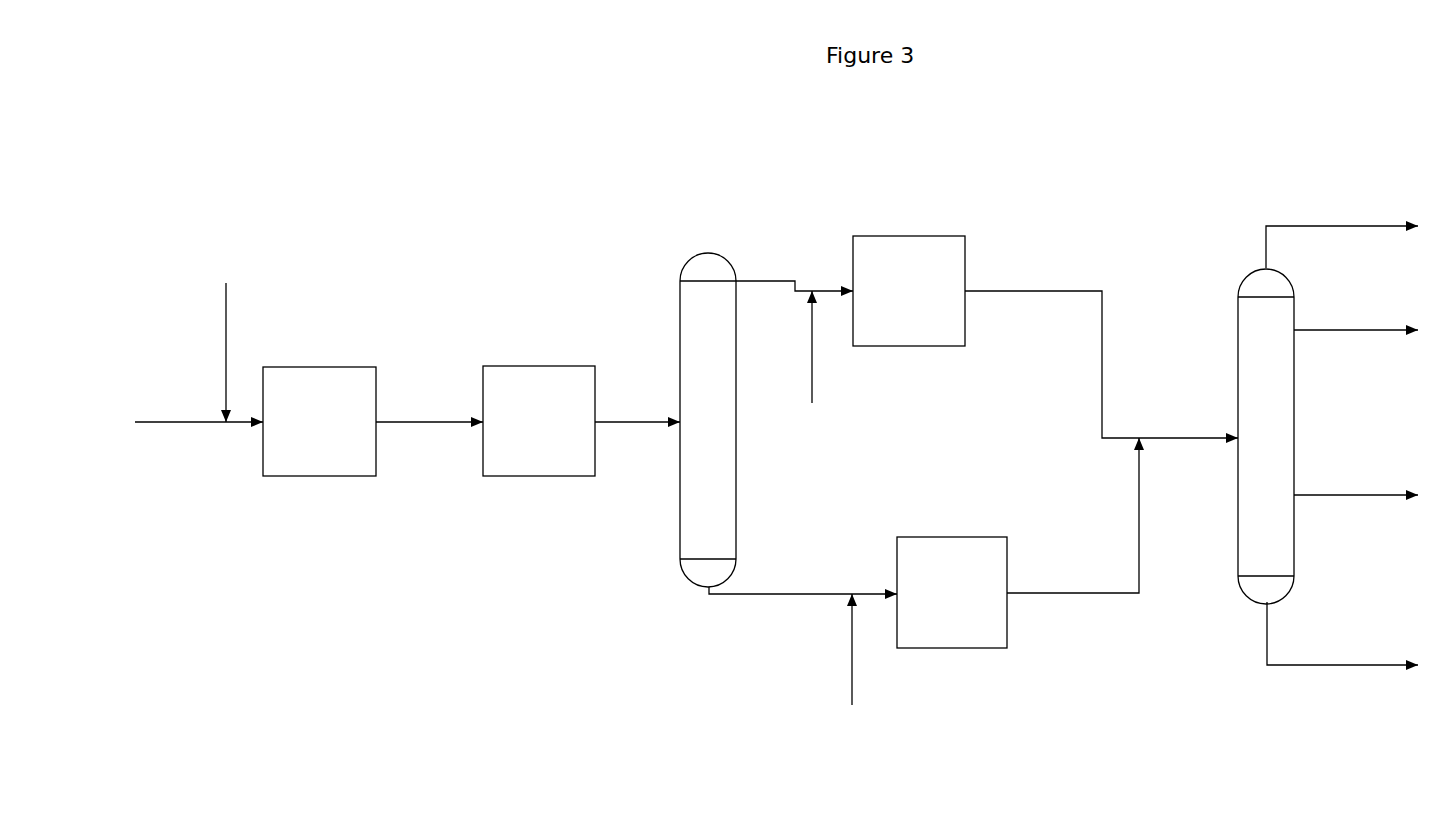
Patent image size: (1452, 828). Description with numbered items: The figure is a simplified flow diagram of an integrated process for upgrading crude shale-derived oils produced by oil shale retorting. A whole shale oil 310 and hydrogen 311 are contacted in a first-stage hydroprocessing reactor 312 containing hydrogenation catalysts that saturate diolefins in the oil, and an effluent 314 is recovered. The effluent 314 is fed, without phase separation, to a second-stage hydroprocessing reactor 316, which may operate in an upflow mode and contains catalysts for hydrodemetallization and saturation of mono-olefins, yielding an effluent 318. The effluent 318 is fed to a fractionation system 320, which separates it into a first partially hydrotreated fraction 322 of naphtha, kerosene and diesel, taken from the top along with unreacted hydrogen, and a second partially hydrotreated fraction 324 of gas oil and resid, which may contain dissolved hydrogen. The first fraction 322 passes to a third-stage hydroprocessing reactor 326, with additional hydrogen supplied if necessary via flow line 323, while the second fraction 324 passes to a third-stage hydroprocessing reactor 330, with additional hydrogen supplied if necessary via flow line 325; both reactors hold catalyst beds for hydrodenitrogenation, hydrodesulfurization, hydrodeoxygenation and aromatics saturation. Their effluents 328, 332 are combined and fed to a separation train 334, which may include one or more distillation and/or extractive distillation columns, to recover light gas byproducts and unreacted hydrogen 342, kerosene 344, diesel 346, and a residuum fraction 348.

The whole shale oil 310 is at (178, 422).
The hydrogen 311 is at (218, 316).
The first-stage hydroprocessing reactor 312 is at (319, 421).
The effluent 314 is at (409, 422).
The second-stage hydroprocessing reactor 316 is at (539, 421).
The effluent 318 is at (631, 422).
The fractionation system 320 is at (706, 250).
The first partially hydrotreated fraction 322 is at (785, 278).
The flow line 323 is at (808, 390).
The second partially hydrotreated fraction 324 is at (788, 590).
The flow line 325 is at (840, 692).
The third-stage hydroprocessing reactor 326 is at (909, 291).
The effluent 328 is at (1028, 289).
The third-stage hydroprocessing reactor 330 is at (952, 592).
The effluent 332 is at (1069, 589).
The separation train 334 is at (1246, 278).
The light gas byproducts and unreacted hydrogen 342 is at (1335, 225).
The kerosene 344 is at (1360, 327).
The diesel 346 is at (1363, 494).
The residuum fraction 348 is at (1373, 661).